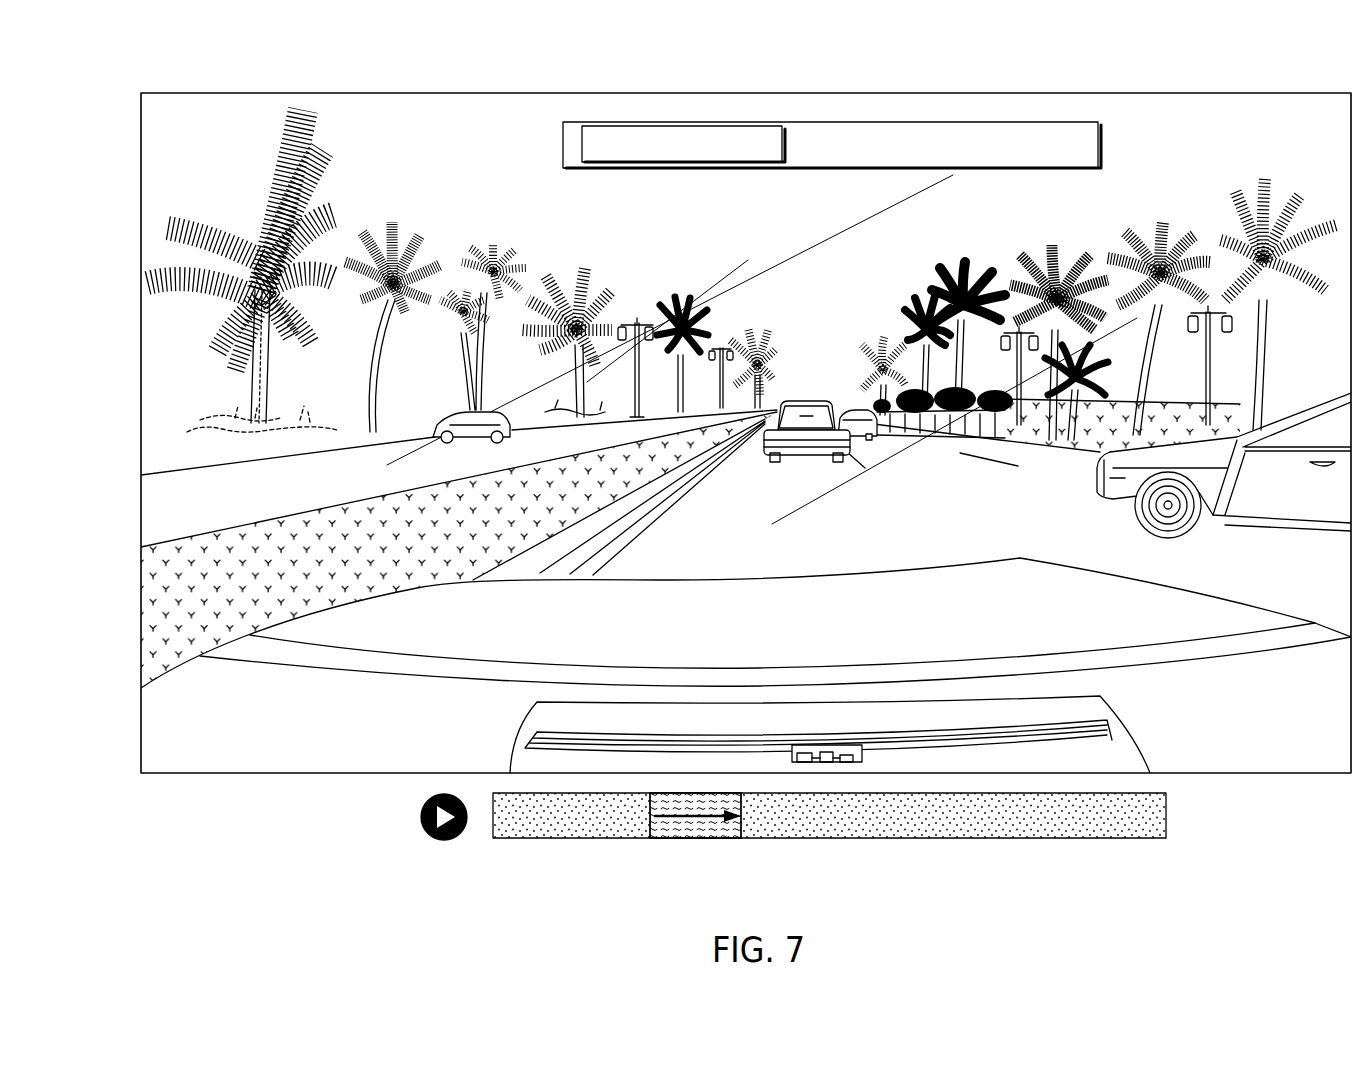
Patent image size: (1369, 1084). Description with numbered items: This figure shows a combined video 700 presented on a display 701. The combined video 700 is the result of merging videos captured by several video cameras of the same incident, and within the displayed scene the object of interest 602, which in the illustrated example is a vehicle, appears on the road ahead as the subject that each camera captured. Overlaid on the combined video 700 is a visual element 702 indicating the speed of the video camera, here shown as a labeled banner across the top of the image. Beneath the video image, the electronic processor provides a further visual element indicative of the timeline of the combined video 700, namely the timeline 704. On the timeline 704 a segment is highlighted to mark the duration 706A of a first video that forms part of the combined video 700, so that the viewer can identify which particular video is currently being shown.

The combined video 700 is at (118, 76).
The display 701 is at (141, 432).
The visual element 702 is at (563, 141).
The object of interest 602 is at (808, 401).
The timeline 704 is at (557, 839).
The duration 706A is at (693, 840).